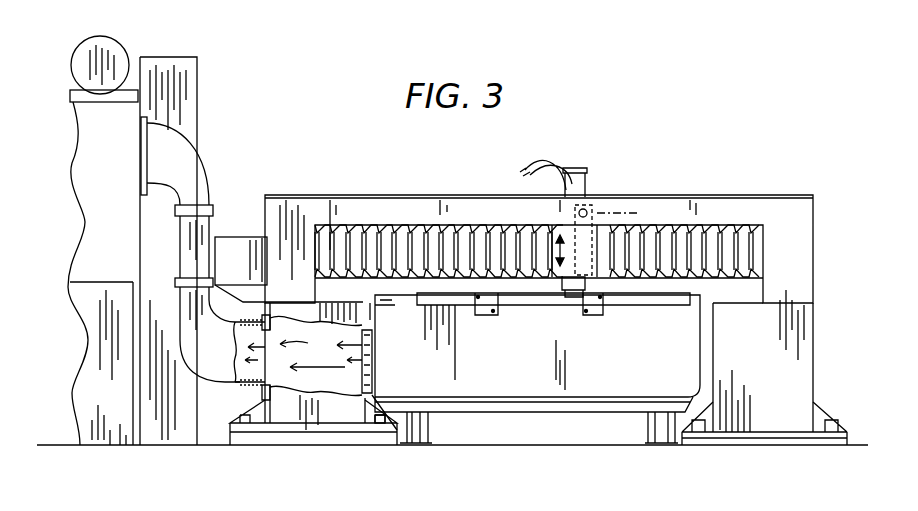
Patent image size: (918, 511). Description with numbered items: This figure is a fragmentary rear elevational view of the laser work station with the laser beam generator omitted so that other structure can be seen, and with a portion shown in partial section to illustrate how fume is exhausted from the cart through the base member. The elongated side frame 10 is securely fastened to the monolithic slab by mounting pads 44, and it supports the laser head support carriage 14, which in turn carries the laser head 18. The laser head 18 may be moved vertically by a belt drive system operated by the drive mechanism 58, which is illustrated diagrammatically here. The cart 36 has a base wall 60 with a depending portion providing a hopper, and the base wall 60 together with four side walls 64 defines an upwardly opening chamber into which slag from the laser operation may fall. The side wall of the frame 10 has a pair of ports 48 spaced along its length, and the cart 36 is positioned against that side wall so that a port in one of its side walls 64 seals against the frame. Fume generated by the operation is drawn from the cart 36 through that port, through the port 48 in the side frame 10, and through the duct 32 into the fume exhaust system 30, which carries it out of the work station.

The side frame 10 is at (300, 404).
The laser head support carriage 14 is at (683, 203).
The laser head 18 is at (587, 183).
The fume exhaust system 30 is at (97, 178).
The duct 32 is at (205, 180).
The cart 36 is at (588, 360).
The mounting pads 44 is at (380, 430).
The ports 48 is at (357, 370).
The drive mechanism 58 is at (595, 222).
The base wall 60 is at (515, 412).
The side walls 64 is at (648, 368).